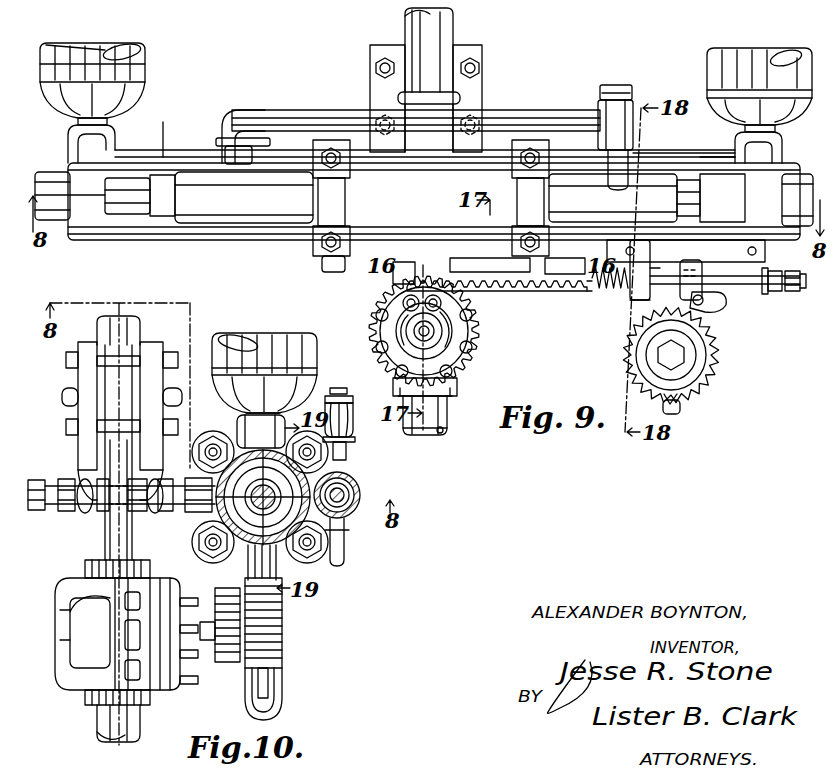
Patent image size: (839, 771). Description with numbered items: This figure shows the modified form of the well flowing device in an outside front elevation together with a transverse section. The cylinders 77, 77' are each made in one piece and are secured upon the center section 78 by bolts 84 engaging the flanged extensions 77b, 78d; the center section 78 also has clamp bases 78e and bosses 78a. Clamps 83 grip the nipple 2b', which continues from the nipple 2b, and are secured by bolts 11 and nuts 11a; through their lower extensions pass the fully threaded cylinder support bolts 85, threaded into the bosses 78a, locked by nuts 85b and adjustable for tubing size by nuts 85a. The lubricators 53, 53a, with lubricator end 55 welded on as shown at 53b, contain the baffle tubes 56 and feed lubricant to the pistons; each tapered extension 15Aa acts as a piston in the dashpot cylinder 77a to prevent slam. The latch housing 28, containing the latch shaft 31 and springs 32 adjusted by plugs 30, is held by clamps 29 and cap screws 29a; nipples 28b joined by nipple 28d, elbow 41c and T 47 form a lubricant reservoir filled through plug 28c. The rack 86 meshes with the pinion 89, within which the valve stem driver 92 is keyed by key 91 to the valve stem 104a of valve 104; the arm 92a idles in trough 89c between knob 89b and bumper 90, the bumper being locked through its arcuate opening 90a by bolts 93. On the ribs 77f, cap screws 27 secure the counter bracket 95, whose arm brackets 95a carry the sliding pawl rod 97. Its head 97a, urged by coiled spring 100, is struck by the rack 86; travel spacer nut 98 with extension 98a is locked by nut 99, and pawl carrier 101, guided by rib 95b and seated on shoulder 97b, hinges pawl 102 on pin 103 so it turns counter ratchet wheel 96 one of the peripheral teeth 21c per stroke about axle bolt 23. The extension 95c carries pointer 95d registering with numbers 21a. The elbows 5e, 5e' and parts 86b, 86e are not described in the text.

In FIG. 9, the baffle tube 56 is at (123, 40).
In FIG. 10, the baffle tube 56 is at (265, 355).
In FIG. 9, the lubricator 53a is at (143, 62).
In FIG. 9, the weld 53b is at (142, 82).
In FIG. 10, the weld 53b is at (292, 378).
In FIG. 9, the cylinder 77' is at (168, 127).
In FIG. 10, the cylinder 77' is at (286, 589).
In FIG. 9, the elbow 41c is at (240, 122).
In FIG. 9, the bolt 84 is at (260, 148).
In FIG. 10, the bolt 84 is at (337, 557).
In FIG. 9, the left elbow 5e' is at (114, 140).
In FIG. 9, the flanged extension 78d is at (305, 140).
In FIG. 9, the flanged extension 77b is at (320, 150).
In FIG. 10, the flanged extension 77b is at (317, 562).
In FIG. 9, the bolt 11 is at (387, 63).
In FIG. 10, the bolt 11 is at (80, 360).
In FIG. 9, the nipple 2b' is at (413, 50).
In FIG. 10, the nipple 2b' is at (101, 438).
In FIG. 9, the clamp 83 is at (440, 62).
In FIG. 10, the clamp 83 is at (152, 342).
In FIG. 9, the nipple 28d is at (362, 117).
In FIG. 9, the center section 78 is at (480, 160).
In FIG. 9, the latch housing clamp 29 is at (278, 224).
In FIG. 10, the latch housing clamp 29 is at (360, 523).
In FIG. 9, the plug 28c is at (612, 88).
In FIG. 10, the plug 28c is at (338, 387).
In FIG. 9, the T 47 is at (625, 128).
In FIG. 9, the nipple 28b is at (632, 153).
In FIG. 9, the lubricator end 55 is at (720, 110).
In FIG. 10, the lubricator end 55 is at (232, 403).
In FIG. 9, the lubricator 53 is at (753, 65).
In FIG. 10, the lubricator 53 is at (262, 352).
In FIG. 9, the cylinder 77 is at (716, 142).
In FIG. 9, the right elbow 5e is at (777, 145).
In FIG. 9, the cap screw 27 is at (625, 252).
In FIG. 9, the rib 77f is at (750, 237).
In FIG. 9, the rib 95b is at (667, 257).
In FIG. 9, the counter bracket 95 is at (715, 253).
In FIG. 9, the extension 98a is at (775, 277).
In FIG. 9, the dashpot cylinder 77a is at (50, 223).
In FIG. 9, the latch housing plug 30 is at (140, 213).
In FIG. 9, the latch housing 28 is at (200, 215).
In FIG. 10, the latch housing 28 is at (350, 553).
In FIG. 9, the cap screw 29a is at (330, 270).
In FIG. 9, the bolt 93 is at (405, 294).
In FIG. 9, the valve stem driver 92 is at (396, 318).
In FIG. 9, the valve 104 is at (375, 330).
In FIG. 10, the valve 104 is at (107, 643).
In FIG. 9, the bumper 90 is at (397, 360).
In FIG. 9, the arcuate opening 90a is at (402, 430).
In FIG. 9, the knob 89b is at (440, 433).
In FIG. 9, the nipple 2b is at (443, 416).
In FIG. 10, the nipple 2b is at (148, 721).
In FIG. 9, the trough 89c is at (453, 400).
In FIG. 9, the valve stem 104a is at (453, 350).
In FIG. 9, the pinion 89 is at (435, 352).
In FIG. 10, the pinion 89 is at (282, 660).
In FIG. 9, the key 91 is at (437, 332).
In FIG. 9, the arm 92a is at (446, 320).
In FIG. 9, the spring 86e is at (462, 290).
In FIG. 9, the rack guide 86b is at (443, 262).
In FIG. 9, the rack 86 is at (523, 294).
In FIG. 10, the rack 86 is at (263, 558).
In FIG. 9, the head 97a is at (600, 290).
In FIG. 9, the coiled spring 100 is at (650, 272).
In FIG. 9, the counter bracket extension 95c is at (650, 298).
In FIG. 9, the shoulder 97b is at (650, 310).
In FIG. 9, the pawl carrier 101 is at (645, 350).
In FIG. 9, the arm bracket 95a is at (640, 290).
In FIG. 9, the pawl rod 97 is at (762, 295).
In FIG. 9, the nut 99 is at (798, 290).
In FIG. 9, the travel spacer nut 98 is at (788, 292).
In FIG. 9, the pin 103 is at (717, 310).
In FIG. 9, the pawl 102 is at (700, 312).
In FIG. 9, the numbers 21a is at (717, 377).
In FIG. 9, the axle bolt 23 is at (674, 359).
In FIG. 9, the counter ratchet wheel 96 is at (683, 400).
In FIG. 9, the pointer 95d is at (670, 416).
In FIG. 10, the pointer 95d is at (283, 705).
In FIG. 9, the peripheral teeth 21c is at (685, 407).
In FIG. 10, the peripheral teeth 21c is at (270, 685).
In FIG. 10, the nut 11a is at (157, 360).
In FIG. 10, the nut 85b is at (193, 482).
In FIG. 10, the latch shaft 31 is at (362, 475).
In FIG. 10, the spring 32 is at (362, 492).
In FIG. 10, the clamp base 78e is at (343, 553).
In FIG. 10, the tapered extension 15Aa is at (313, 597).
In FIG. 10, the cylinder support bolt 85 is at (90, 513).
In FIG. 10, the nut 85a is at (80, 513).
In FIG. 10, the boss 78a is at (237, 430).